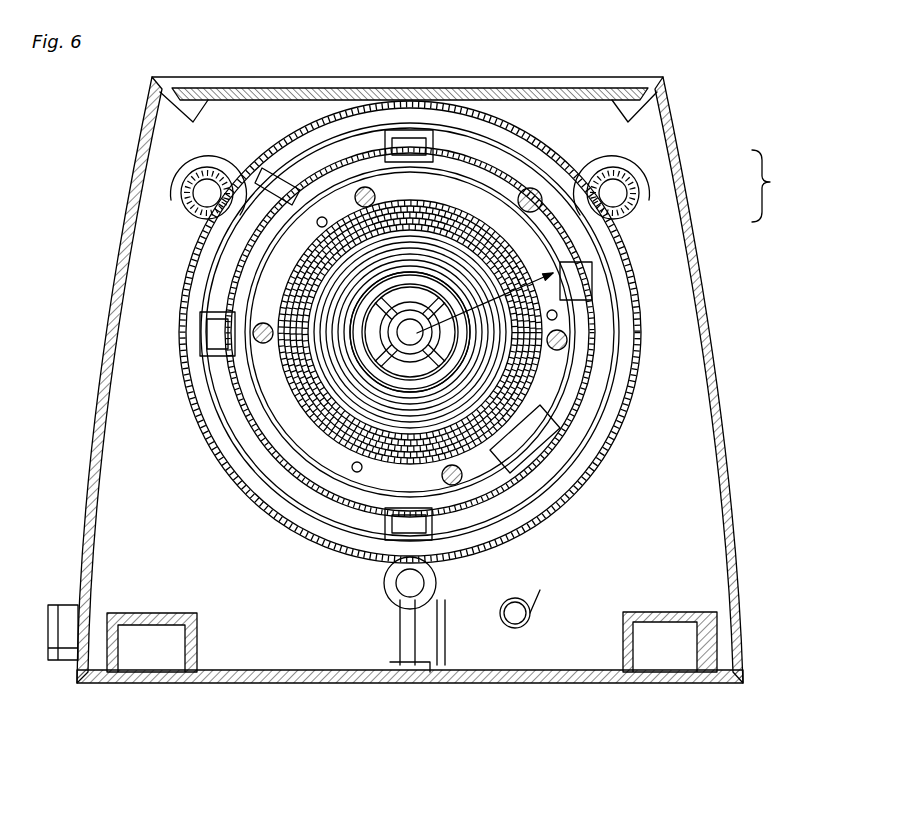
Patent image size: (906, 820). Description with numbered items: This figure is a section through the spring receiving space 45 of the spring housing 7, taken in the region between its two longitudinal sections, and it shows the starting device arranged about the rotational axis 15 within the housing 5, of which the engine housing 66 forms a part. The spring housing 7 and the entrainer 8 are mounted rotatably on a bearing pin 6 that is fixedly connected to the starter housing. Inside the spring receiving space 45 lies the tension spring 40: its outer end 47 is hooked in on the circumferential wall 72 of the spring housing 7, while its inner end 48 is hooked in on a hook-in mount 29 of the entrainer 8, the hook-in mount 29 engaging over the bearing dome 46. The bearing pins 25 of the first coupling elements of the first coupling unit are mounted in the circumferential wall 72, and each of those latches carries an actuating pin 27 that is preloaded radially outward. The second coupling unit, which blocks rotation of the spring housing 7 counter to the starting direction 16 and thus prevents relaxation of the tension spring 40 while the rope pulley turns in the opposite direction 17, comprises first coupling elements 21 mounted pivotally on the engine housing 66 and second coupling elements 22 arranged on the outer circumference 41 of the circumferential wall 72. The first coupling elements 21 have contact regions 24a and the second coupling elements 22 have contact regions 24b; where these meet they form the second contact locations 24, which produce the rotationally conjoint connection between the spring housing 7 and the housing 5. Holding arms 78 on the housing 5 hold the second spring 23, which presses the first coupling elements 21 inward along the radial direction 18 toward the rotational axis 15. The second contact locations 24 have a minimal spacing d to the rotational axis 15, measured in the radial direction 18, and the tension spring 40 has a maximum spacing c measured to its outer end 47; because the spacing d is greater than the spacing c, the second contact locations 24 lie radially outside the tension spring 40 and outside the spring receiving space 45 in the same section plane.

The housing 5 is at (280, 185).
The bearing pin 6 is at (413, 333).
The spring housing 7 is at (528, 447).
The entrainer 8 is at (590, 352).
The rotational axis 15 is at (467, 380).
The starting direction 16 is at (165, 433).
The opposite direction 17 is at (230, 527).
The radial direction 18 is at (210, 525).
The first coupling elements 21 is at (300, 175).
The second coupling elements 22 is at (556, 272).
The second spring 23 is at (500, 220).
The second contact locations 24 is at (481, 411).
The contact regions 24a is at (553, 223).
The contact regions 24b is at (573, 262).
The bearing pins 25 is at (362, 190).
The actuating pin 27 is at (535, 193).
The hook-in mount 29 is at (422, 480).
The tension spring 40 is at (463, 340).
The outer circumference 41 is at (245, 370).
The spring receiving space 45 is at (410, 347).
The bearing dome 46 is at (392, 452).
The outer end 47 is at (410, 350).
The inner end 48 is at (437, 367).
The engine housing 66 is at (650, 100).
The circumferential wall 72 is at (505, 455).
The holding arms 78 is at (410, 147).
The maximum spacing c is at (412, 350).
The minimal spacing d is at (558, 316).